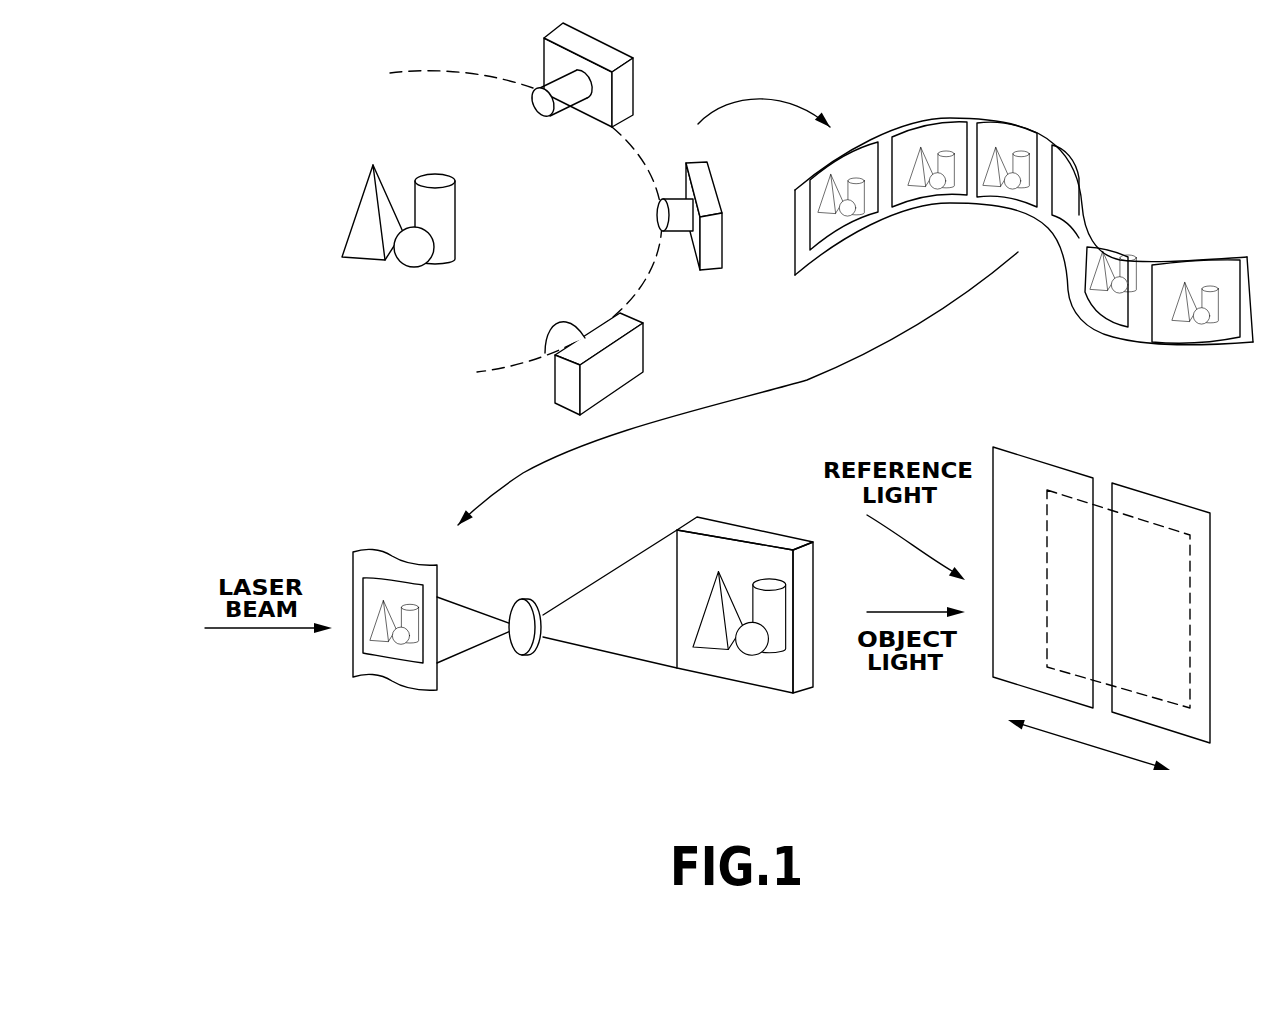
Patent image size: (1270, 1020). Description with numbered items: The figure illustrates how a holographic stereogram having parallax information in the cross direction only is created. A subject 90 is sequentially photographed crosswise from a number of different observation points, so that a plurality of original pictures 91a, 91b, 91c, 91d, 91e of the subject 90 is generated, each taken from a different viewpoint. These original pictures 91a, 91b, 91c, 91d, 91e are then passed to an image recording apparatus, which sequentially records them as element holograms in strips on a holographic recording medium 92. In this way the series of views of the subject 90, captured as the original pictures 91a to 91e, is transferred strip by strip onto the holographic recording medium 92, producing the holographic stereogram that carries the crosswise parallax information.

The subject 90 is at (330, 200).
The original picture 91a is at (858, 163).
The original picture 91b is at (942, 140).
The original picture 91c is at (1015, 143).
The original picture 91d is at (1103, 253).
The original picture 91e is at (1212, 277).
The holographic recording medium 92 is at (1073, 498).